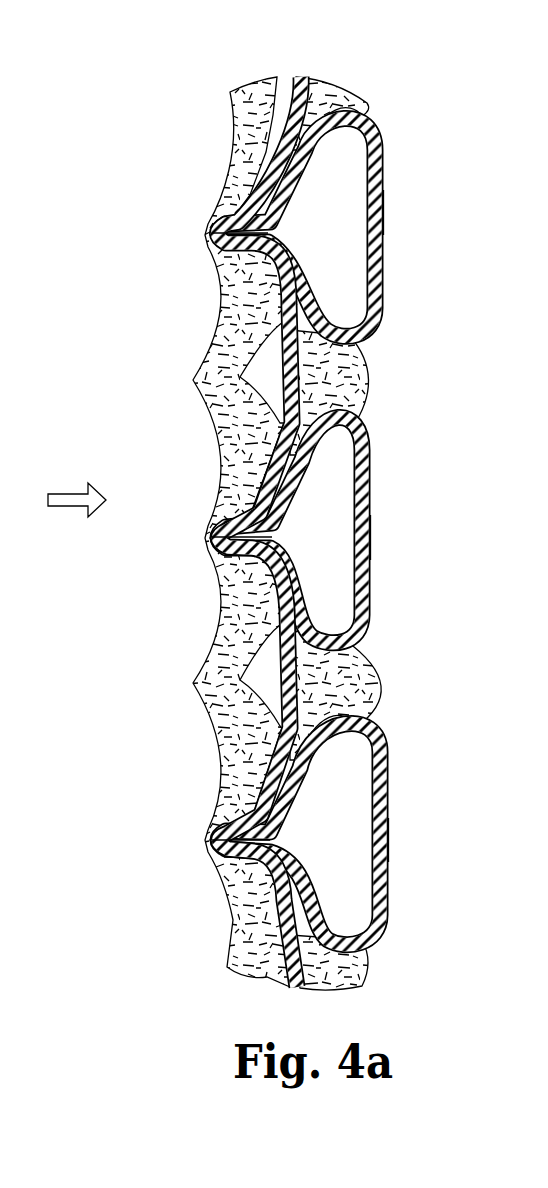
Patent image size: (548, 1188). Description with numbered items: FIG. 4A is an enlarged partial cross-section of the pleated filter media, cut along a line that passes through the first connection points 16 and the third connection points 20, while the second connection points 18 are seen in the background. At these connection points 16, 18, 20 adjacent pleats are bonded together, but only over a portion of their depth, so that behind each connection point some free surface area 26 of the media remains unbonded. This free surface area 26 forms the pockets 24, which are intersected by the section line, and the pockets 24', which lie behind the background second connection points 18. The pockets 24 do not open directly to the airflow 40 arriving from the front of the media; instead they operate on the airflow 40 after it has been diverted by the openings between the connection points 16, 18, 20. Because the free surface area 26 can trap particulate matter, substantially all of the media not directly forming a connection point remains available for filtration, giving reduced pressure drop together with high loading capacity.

The first connection points 16 is at (167, 234).
The second connection points 18 is at (167, 383).
The third connection points 20 is at (167, 538).
The pockets 24 is at (337, 531).
The pockets 24' is at (370, 533).
The free surface area 26 is at (369, 225).
The airflow 40 is at (65, 494).